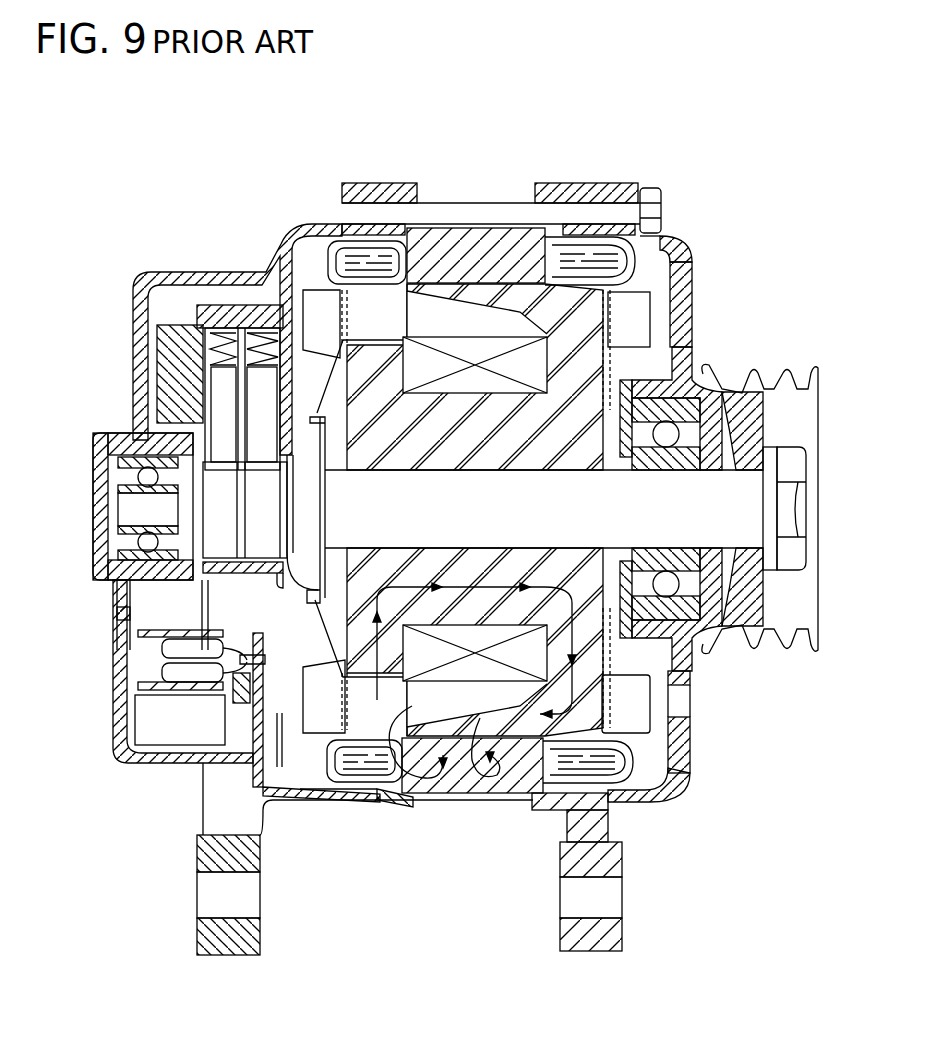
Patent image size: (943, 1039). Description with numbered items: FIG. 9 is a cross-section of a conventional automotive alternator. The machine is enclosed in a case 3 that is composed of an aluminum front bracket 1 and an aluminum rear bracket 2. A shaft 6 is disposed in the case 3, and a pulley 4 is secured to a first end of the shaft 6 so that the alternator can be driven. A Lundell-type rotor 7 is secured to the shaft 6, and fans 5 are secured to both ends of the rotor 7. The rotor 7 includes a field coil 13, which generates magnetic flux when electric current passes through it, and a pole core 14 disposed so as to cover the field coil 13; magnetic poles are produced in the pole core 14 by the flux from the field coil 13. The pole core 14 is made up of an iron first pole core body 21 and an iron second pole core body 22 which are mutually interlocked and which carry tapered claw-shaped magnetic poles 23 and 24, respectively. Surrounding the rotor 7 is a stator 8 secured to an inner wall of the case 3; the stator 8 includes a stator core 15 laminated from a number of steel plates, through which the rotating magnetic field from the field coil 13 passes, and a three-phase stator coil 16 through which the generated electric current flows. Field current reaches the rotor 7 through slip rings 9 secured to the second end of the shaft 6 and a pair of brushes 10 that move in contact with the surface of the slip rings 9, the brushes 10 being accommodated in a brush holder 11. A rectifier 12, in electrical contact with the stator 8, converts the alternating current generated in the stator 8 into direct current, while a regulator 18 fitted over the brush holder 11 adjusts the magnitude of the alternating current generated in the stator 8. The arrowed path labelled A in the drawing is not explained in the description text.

The front bracket 1 is at (687, 357).
The rear bracket 2 is at (110, 445).
The case 3 is at (543, 803).
The pulley 4 is at (800, 657).
The fans 5 is at (322, 297).
The shaft 6 is at (750, 513).
The rotor 7 is at (527, 426).
The stator 8 is at (462, 520).
The slip rings 9 is at (215, 502).
The brushes 10 is at (220, 387).
The brush holder 11 is at (228, 310).
The rectifier 12 is at (167, 732).
The field coil 13 is at (468, 353).
The pole core 14 is at (512, 298).
The stator core 15 is at (450, 240).
The three-phase stator coil 16 is at (345, 758).
The regulator 18 is at (198, 328).
The first pole core body 21 is at (567, 308).
The second pole core body 22 is at (370, 300).
The claw-shaped magnetic poles 23 is at (473, 745).
The claw-shaped magnetic poles 24 is at (415, 735).
The cooling air flow A is at (568, 677).